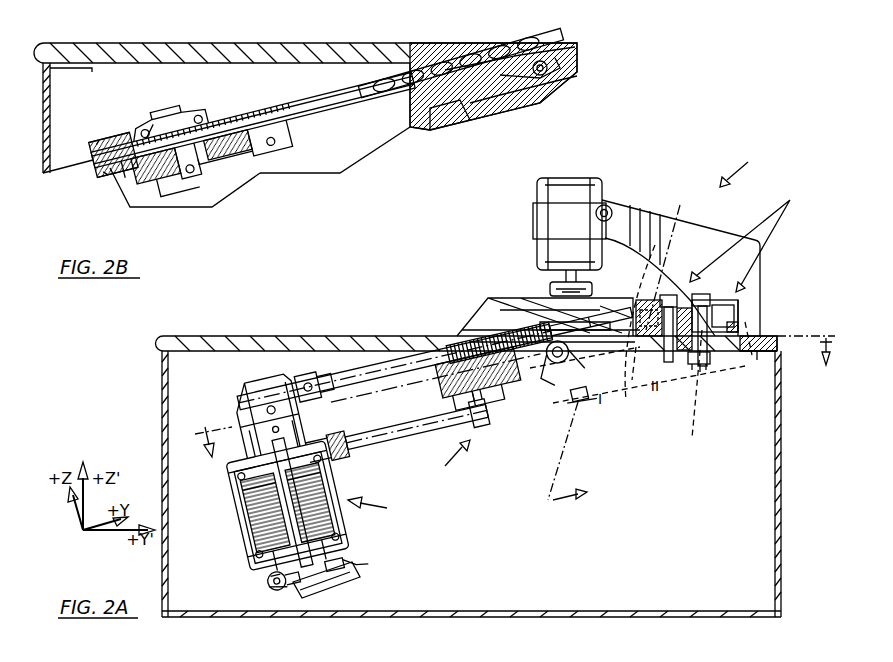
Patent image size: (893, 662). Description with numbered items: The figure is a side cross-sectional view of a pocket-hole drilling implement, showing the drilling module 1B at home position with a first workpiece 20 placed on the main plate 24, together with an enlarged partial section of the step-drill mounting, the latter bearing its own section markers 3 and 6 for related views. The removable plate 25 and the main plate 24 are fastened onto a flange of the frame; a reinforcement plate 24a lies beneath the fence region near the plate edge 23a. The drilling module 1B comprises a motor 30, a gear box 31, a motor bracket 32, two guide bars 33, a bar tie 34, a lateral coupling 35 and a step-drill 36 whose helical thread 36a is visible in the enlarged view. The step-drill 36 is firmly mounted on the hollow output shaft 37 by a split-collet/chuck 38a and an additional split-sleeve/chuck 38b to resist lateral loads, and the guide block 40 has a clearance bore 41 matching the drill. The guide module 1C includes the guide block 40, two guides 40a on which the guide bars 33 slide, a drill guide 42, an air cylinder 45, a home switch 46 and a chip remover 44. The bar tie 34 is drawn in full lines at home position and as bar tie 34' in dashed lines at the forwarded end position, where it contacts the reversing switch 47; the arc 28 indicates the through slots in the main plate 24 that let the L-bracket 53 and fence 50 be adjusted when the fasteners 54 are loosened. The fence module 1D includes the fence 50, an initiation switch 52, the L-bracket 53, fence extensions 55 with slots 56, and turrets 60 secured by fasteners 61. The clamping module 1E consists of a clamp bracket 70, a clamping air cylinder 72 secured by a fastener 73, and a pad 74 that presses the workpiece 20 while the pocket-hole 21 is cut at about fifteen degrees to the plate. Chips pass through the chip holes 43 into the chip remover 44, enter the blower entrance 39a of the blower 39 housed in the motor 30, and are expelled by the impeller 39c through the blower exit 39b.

In FIG. 2A, the first workpiece 20 is at (472, 333).
In FIG. 2A, the pocket-hole 21 is at (537, 337).
In FIG. 2A, the housing wall 23a is at (785, 352).
In FIG. 2A, the main plate 24 is at (465, 337).
In FIG. 2A, the reinforcement plate 24a is at (742, 353).
In FIG. 2A, the removable plate 25 is at (265, 336).
In FIG. 2A, the longitudinal through slot 28 is at (634, 404).
In FIG. 2A, the motor 30 is at (233, 488).
In FIG. 2B, the gear box 31 is at (165, 100).
In FIG. 2A, the gear box 31 is at (252, 388).
In FIG. 2A, the motor bracket 32 is at (348, 462).
In FIG. 2A, the guide bar 33 is at (395, 424).
In FIG. 2A, the bar tie 34 is at (641, 399).
In FIG. 2A, the bar tie (forwarded end position) 34' is at (684, 390).
In FIG. 2A, the lateral coupling 35 is at (312, 386).
In FIG. 2B, the step-drill 36 is at (92, 162).
In FIG. 2A, the step-drill 36 is at (393, 360).
In FIG. 2B, the screw thread 36a is at (500, 48).
In FIG. 2B, the output shaft 37 is at (143, 130).
In FIG. 2B, the split-collet/chuck 38a is at (262, 138).
In FIG. 2B, the split-sleeve/chuck 38b is at (112, 185).
In FIG. 2A, the blower 39 is at (262, 575).
In FIG. 2A, the blower entrance 39a is at (358, 575).
In FIG. 2A, the blower exit 39b is at (271, 583).
In FIG. 2A, the impeller 39c is at (345, 558).
In FIG. 2A, the guide block 40 is at (447, 380).
In FIG. 2B, the guide 40a is at (410, 128).
In FIG. 2B, the clearance bore 41 is at (485, 62).
In FIG. 2A, the drill guide 42 is at (430, 335).
In FIG. 2A, the chip hole 43 is at (518, 380).
In FIG. 2A, the chip remover 44 is at (580, 337).
In FIG. 2A, the air cylinder 45 is at (552, 408).
In FIG. 2A, the home switch 46 is at (548, 378).
In FIG. 2A, the reversing switch 47 is at (722, 353).
In FIG. 2A, the fence 50 is at (645, 300).
In FIG. 2A, the initiation switch 52 is at (680, 206).
In FIG. 2A, the L-bracket 53 is at (685, 352).
In FIG. 2A, the fastener 54 is at (698, 295).
In FIG. 2A, the fence extension 55 is at (735, 330).
In FIG. 2A, the longitudinal through slot 56 is at (737, 312).
In FIG. 2A, the turret 60 is at (730, 296).
In FIG. 2A, the fastener 61 is at (704, 363).
In FIG. 2A, the clamp bracket 70 is at (655, 206).
In FIG. 2A, the air cylinder 72 is at (537, 186).
In FIG. 2A, the fastener 73 is at (611, 206).
In FIG. 2A, the pad 74 is at (548, 281).
In FIG. 2A, the section line 3 is at (512, 378).
In FIG. 2A, the section line 6 is at (556, 457).
In FIG. 2A, the drilling module 1B is at (382, 508).
In FIG. 2A, the guide module 1C is at (444, 460).
In FIG. 2A, the fence module 1D is at (752, 236).
In FIG. 2A, the clamping module 1E is at (746, 167).